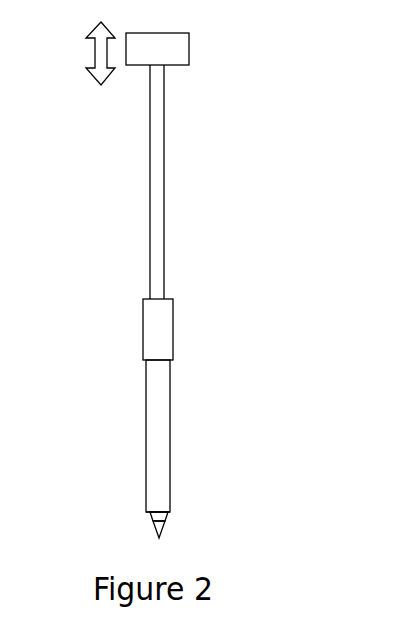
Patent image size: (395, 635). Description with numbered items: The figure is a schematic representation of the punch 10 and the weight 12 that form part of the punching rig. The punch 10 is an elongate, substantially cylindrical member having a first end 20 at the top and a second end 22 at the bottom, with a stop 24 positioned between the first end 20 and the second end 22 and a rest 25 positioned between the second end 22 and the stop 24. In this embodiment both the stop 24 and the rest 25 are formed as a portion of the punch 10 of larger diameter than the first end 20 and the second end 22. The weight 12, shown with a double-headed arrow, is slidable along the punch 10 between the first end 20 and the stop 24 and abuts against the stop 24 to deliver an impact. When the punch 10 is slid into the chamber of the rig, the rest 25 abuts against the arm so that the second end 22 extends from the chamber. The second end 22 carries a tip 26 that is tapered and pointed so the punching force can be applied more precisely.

The punch 10 is at (117, 296).
The weight 12 is at (168, 52).
The first end 20 is at (164, 77).
The second end 22 is at (160, 512).
The stop 24 is at (163, 298).
The rest 25 is at (160, 358).
The tip 26 is at (158, 527).